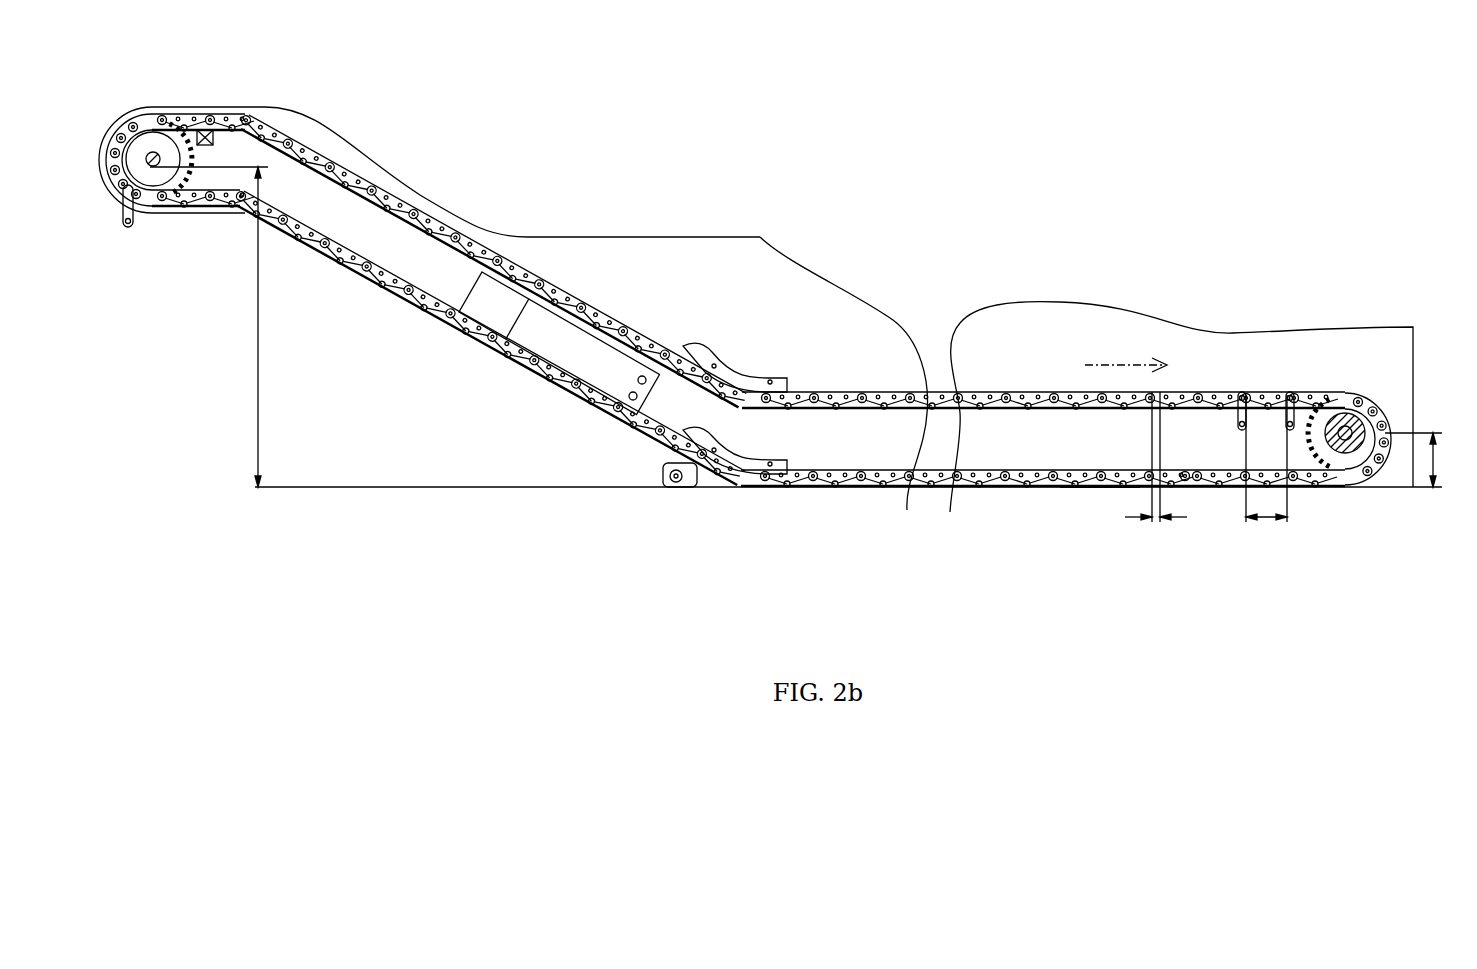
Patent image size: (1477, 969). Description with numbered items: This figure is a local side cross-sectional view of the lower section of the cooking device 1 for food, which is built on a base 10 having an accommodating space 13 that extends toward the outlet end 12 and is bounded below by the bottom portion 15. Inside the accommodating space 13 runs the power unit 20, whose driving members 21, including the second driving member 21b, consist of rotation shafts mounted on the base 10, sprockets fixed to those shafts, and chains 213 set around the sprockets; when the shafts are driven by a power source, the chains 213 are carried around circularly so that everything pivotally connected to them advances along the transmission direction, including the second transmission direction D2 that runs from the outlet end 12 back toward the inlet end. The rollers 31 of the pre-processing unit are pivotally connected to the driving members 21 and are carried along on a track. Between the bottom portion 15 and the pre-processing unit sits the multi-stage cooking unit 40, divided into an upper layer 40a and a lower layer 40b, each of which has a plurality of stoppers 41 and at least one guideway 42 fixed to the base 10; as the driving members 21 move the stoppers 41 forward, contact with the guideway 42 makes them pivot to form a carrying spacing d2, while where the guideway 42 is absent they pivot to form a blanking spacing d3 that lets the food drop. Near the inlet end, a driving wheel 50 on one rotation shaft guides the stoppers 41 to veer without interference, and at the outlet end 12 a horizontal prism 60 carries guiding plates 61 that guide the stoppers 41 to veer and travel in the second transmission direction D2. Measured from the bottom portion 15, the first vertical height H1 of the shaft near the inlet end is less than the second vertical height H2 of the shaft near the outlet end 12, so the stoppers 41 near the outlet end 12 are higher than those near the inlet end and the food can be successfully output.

The cooking device 1 is at (1332, 282).
The base 10 is at (429, 171).
The outlet end 12 is at (162, 233).
The accommodating space 13 is at (557, 250).
The bottom portion 15 is at (1100, 487).
The power unit 20 is at (498, 300).
The driving members 21 is at (608, 296).
The second driving member 21b is at (492, 261).
The rollers 31 is at (848, 511).
The multi-stage cooking unit 40 is at (758, 488).
The upper layer 40a is at (797, 412).
The lower layer 40b is at (824, 487).
The stoppers 41 is at (870, 478).
The guideway 42 is at (970, 480).
The driving wheel 50 is at (1369, 483).
The horizontal prism 60 is at (201, 128).
The guiding plates 61 is at (128, 127).
The chains 213 is at (1185, 481).
The first vertical height H1 is at (1427, 460).
The second vertical height H2 is at (223, 327).
The carrying spacing d2 is at (1156, 472).
The blanking spacing d3 is at (1266, 474).
The second transmission direction D2 is at (1127, 362).